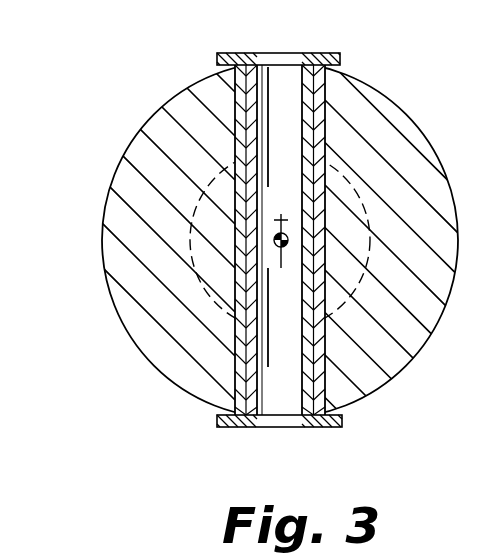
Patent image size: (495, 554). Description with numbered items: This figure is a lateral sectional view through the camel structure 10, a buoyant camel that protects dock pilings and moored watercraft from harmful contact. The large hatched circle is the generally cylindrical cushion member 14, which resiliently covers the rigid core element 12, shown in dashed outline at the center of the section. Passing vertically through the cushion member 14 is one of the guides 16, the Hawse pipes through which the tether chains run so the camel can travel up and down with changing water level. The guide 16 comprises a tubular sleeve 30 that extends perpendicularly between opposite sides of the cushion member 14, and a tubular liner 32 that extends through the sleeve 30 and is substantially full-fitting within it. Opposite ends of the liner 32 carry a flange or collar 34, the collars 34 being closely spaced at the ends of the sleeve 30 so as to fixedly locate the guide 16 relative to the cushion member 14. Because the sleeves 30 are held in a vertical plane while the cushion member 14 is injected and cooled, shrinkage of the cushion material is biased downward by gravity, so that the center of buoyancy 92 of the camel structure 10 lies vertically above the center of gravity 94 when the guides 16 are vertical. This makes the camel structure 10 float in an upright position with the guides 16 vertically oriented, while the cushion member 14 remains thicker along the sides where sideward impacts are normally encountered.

The camel structure 10 is at (192, 452).
The rigid core element 12 is at (350, 178).
The cushion member 14 is at (433, 146).
The guide 16 is at (340, 428).
The tubular sleeve 30 is at (325, 108).
The tubular liner 32 is at (302, 391).
The flange or collar 34 is at (313, 428).
The center of buoyancy 92 is at (281, 218).
The center of gravity 94 is at (281, 268).